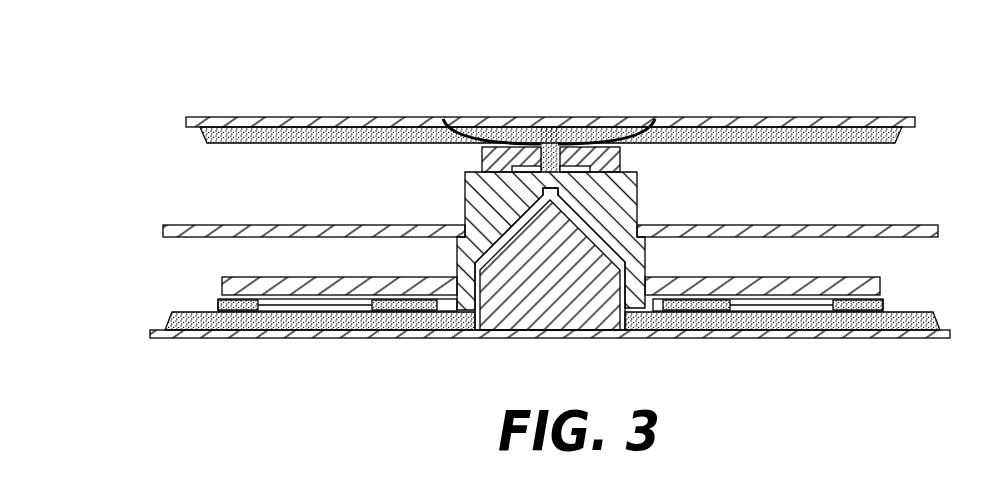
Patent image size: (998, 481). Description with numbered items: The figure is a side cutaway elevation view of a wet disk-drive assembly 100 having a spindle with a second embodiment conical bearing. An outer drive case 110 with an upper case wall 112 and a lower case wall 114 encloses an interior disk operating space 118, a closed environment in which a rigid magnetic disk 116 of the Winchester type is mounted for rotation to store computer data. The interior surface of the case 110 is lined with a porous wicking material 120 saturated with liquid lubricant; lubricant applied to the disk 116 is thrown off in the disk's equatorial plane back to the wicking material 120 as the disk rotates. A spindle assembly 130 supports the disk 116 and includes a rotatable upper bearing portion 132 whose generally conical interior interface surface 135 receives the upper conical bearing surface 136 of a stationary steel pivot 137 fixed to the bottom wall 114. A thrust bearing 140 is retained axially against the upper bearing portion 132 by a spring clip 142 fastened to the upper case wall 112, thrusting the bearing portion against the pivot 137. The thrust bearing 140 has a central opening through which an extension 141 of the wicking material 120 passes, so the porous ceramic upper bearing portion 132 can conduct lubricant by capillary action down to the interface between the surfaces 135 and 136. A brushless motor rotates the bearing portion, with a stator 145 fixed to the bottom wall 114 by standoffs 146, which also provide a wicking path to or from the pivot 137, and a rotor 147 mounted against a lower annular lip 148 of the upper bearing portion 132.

The disk-drive assembly 100 is at (547, 201).
The outer drive case 110 is at (530, 170).
The upper case wall 112 is at (353, 117).
The lower case wall 114 is at (290, 337).
The rigid magnetic disk 116 is at (298, 225).
The interior disk operating space 118 is at (282, 189).
The porous wicking material 120 is at (350, 143).
The spindle assembly 130 is at (620, 267).
The rotatable upper bearing portion 132 is at (637, 218).
The conical interior interface surface 135 is at (613, 245).
The upper conical bearing surface 136 is at (515, 233).
The stationary steel pivot 137 is at (600, 307).
The thrust bearing 140 is at (620, 160).
The extension of the wicking material 141 is at (556, 135).
The spring clip 142 is at (668, 120).
The stator 145 is at (890, 310).
The standoffs 146 is at (230, 311).
The rotor 147 is at (812, 277).
The lower annular lip 148 is at (468, 311).